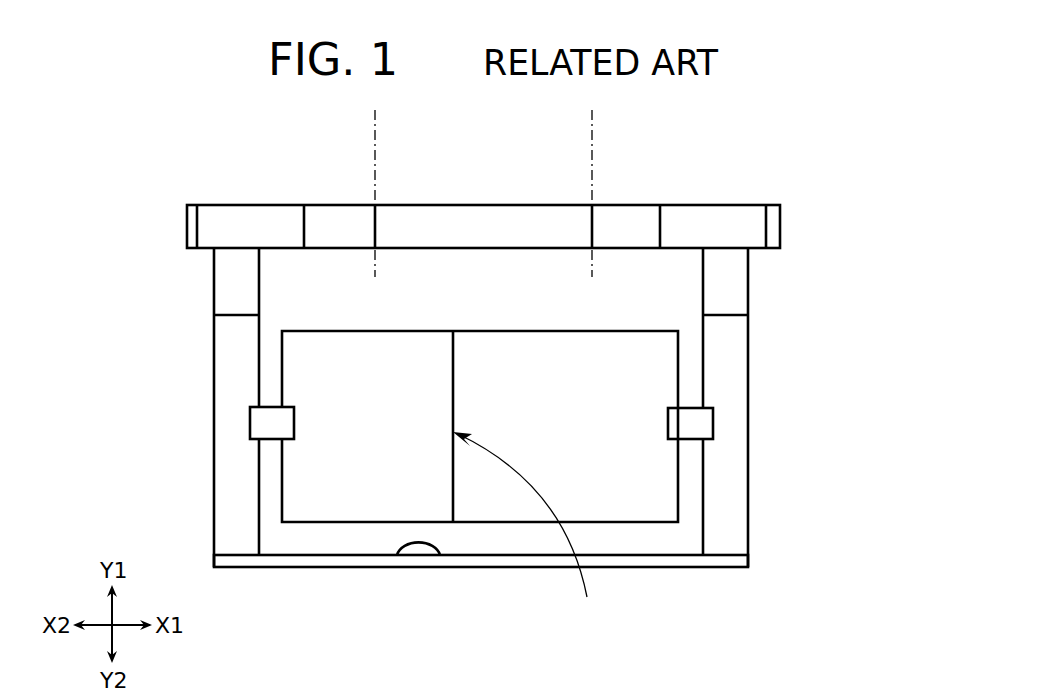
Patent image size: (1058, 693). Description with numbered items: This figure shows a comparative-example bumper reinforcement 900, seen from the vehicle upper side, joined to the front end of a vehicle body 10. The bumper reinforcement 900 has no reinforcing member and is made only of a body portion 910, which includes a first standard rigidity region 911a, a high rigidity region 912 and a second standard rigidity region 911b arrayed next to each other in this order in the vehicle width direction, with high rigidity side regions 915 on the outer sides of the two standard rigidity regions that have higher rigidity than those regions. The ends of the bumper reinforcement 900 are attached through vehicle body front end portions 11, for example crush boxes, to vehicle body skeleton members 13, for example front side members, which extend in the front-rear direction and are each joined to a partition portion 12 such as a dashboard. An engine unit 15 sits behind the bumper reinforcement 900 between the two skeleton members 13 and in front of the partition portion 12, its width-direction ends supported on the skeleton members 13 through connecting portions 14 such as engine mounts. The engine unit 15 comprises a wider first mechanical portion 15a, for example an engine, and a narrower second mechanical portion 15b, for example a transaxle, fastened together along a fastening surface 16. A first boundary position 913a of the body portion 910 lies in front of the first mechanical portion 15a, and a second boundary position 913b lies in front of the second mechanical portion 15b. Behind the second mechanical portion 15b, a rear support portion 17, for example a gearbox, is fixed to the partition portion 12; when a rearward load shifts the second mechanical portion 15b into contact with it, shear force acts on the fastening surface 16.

The bumper reinforcement 900 is at (546, 186).
The body portion 910 is at (782, 227).
The first standard rigidity region 911a is at (635, 212).
The second standard rigidity region 911b is at (345, 212).
The high rigidity region 912 is at (485, 212).
The first boundary position 913a is at (593, 149).
The second boundary position 913b is at (375, 143).
The high rigidity side region 915 is at (250, 212).
The vehicle body 10 is at (525, 466).
The vehicle body front end portion 11 is at (222, 283).
The partition portion 12 is at (657, 559).
The vehicle body skeleton member 13 is at (222, 479).
The connecting portion 14 is at (265, 424).
The engine unit 15 is at (480, 508).
The first mechanical portion 15a is at (493, 485).
The second mechanical portion 15b is at (410, 482).
The fastening surface 16 is at (528, 531).
The rear support portion 17 is at (413, 556).